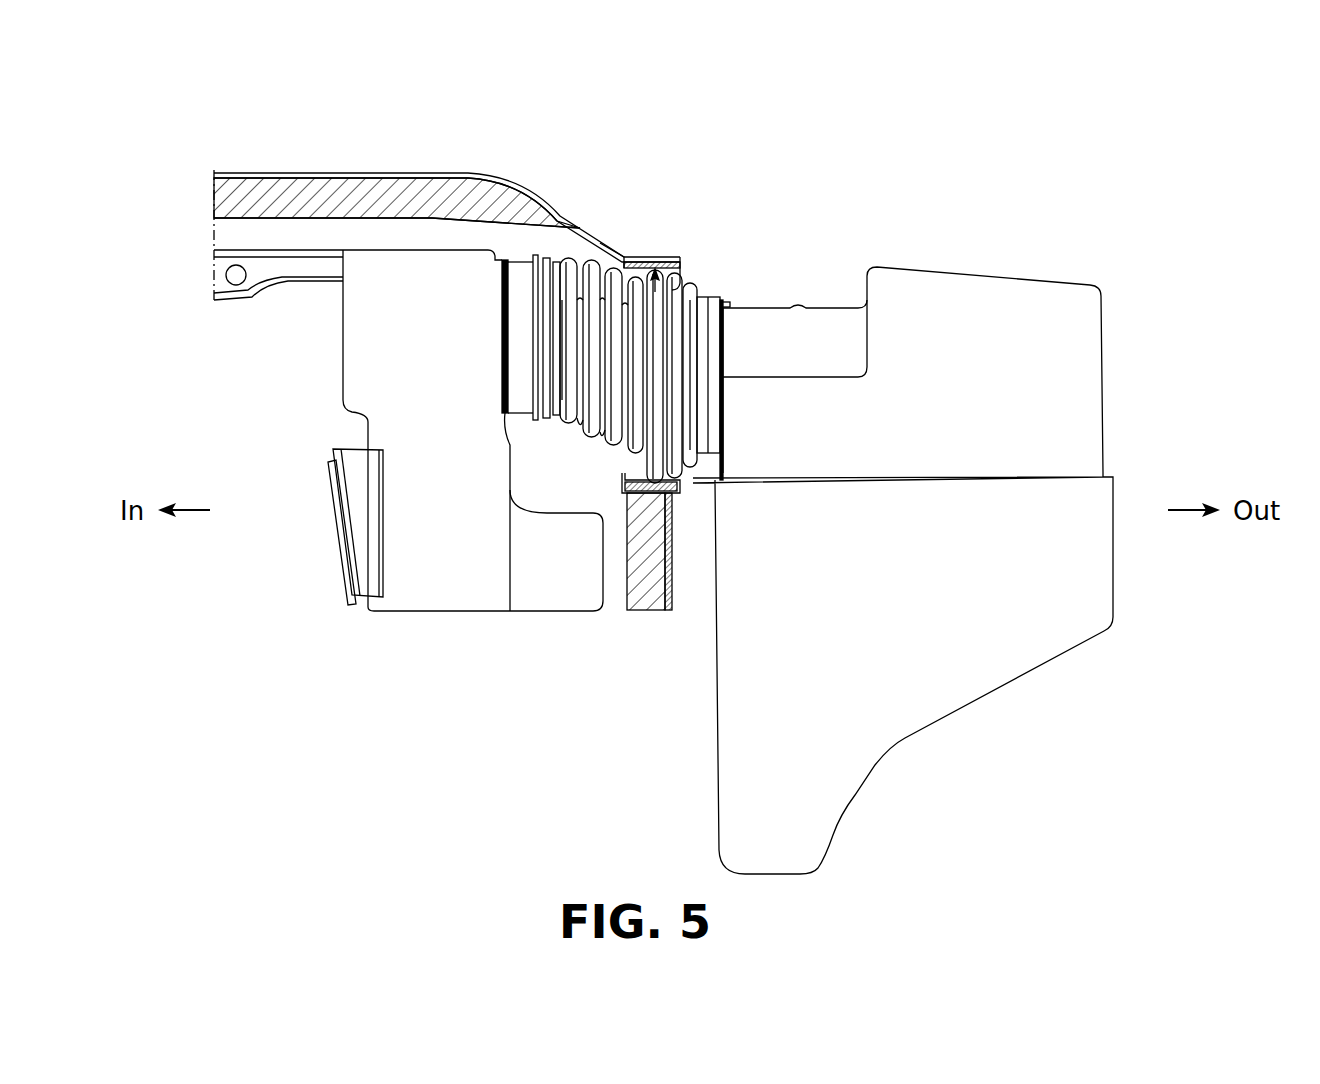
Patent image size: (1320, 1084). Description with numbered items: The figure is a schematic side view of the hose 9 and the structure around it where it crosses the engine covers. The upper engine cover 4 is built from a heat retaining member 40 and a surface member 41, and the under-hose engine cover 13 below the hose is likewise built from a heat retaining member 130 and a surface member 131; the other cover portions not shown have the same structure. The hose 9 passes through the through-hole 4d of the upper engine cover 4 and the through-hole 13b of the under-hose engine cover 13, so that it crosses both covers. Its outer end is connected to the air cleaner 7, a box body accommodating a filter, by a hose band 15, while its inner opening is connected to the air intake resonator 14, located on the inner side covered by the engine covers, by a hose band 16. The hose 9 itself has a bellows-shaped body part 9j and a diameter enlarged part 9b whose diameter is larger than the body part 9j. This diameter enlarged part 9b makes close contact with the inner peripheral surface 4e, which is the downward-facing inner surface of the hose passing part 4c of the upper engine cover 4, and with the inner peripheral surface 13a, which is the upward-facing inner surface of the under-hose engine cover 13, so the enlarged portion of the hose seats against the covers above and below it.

The upper engine cover 4 is at (522, 106).
The heat retaining member 40 is at (461, 205).
The surface member 41 is at (408, 176).
The hose band 16 is at (515, 277).
The hose 9 is at (590, 320).
The body part 9j is at (563, 352).
The diameter enlarged part 9b is at (690, 397).
The hose passing part 4c is at (641, 250).
The through-hole 4d is at (626, 260).
The inner peripheral surface 4e is at (678, 281).
The hose band 15 is at (707, 308).
The air cleaner 7 is at (1010, 300).
The air intake resonator 14 is at (373, 333).
The through-hole 13b is at (612, 461).
The inner peripheral surface 13a is at (628, 478).
The under-hose engine cover 13 is at (678, 704).
The heat retaining member 130 is at (632, 598).
The surface member 131 is at (672, 598).